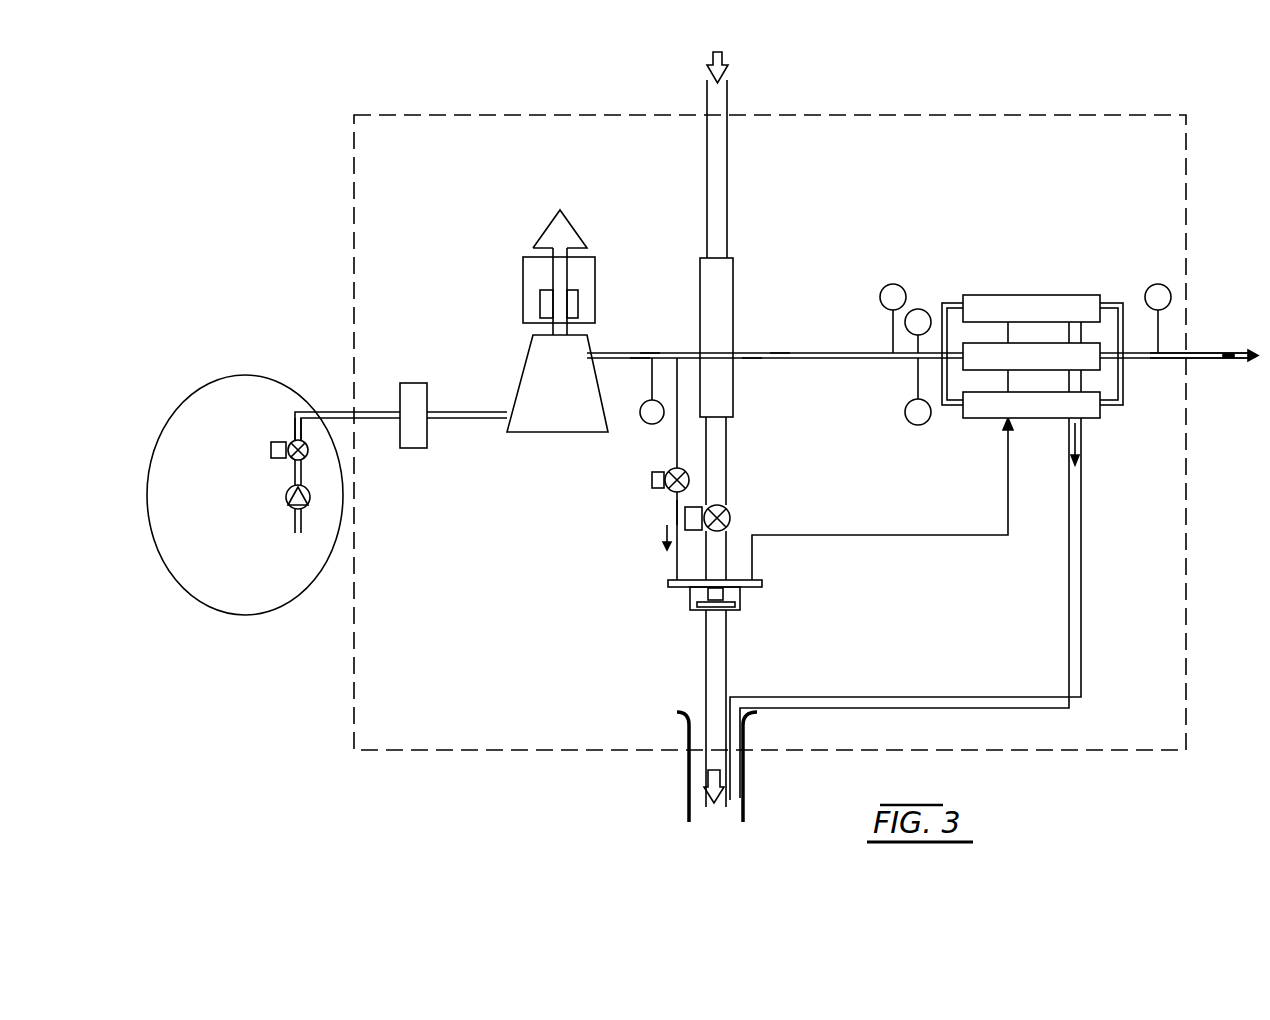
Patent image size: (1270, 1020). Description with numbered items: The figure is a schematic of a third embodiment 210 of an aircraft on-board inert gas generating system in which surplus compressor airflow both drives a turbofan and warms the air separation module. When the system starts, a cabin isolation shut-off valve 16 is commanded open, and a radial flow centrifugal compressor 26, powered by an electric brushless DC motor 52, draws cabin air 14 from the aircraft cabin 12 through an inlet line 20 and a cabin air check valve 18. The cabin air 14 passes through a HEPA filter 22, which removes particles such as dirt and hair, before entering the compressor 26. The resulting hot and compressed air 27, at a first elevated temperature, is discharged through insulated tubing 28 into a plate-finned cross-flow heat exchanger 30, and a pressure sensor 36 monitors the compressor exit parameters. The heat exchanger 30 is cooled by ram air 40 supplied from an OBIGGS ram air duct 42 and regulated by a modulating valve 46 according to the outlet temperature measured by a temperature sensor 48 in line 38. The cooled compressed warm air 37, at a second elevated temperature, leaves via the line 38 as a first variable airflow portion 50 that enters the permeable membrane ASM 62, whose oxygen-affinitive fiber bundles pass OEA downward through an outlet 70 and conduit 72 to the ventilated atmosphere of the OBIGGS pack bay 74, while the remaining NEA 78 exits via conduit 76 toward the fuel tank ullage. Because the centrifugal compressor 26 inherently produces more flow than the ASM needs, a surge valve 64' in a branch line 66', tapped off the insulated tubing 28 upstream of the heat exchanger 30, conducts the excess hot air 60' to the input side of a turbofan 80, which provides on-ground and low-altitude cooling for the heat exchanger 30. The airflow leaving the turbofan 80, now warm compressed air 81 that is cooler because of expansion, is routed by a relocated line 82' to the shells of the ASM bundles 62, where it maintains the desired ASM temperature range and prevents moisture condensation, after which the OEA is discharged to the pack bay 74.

The aircraft cabin 12 is at (232, 613).
The cabin air 14 is at (298, 533).
The cabin isolation shut-off valve 16 is at (286, 440).
The cabin air check valve 18 is at (286, 497).
The inlet line 20 is at (370, 412).
The HEPA filter 22 is at (415, 448).
The radial flow centrifugal compressor 26 is at (557, 383).
The hot and compressed air 27 is at (650, 352).
The insulated tubing 28 is at (643, 359).
The heat exchanger 30 is at (733, 265).
The pressure sensor 36 is at (652, 424).
The compressed warm air 37 is at (780, 352).
The line 38 is at (752, 359).
The ram air 40 is at (722, 108).
The OBIGGS ram air duct 42 is at (723, 75).
The modulating valve 46 is at (728, 515).
The temperature sensor 48 is at (917, 310).
The first variable airflow portion 50 is at (870, 352).
The motor 52 is at (595, 275).
The hot air 60' is at (649, 469).
The air separation module 62 is at (1044, 292).
The surge valve 64' is at (646, 484).
The line 66' is at (649, 514).
The return line 70 is at (1081, 436).
The conduit 72 is at (1068, 558).
The OBIGGS pack bay 74 is at (354, 228).
The conduit 76 is at (1193, 352).
The NEA 78 is at (1243, 362).
The turbofan 80 is at (688, 598).
The warm compressed air 81 is at (922, 537).
The line 82' is at (824, 557).
The third embodiment 210 is at (1098, 106).